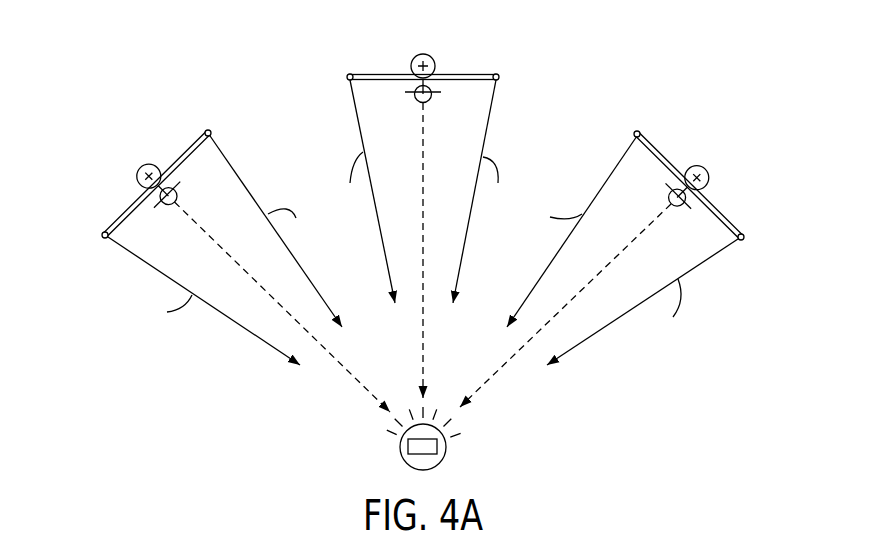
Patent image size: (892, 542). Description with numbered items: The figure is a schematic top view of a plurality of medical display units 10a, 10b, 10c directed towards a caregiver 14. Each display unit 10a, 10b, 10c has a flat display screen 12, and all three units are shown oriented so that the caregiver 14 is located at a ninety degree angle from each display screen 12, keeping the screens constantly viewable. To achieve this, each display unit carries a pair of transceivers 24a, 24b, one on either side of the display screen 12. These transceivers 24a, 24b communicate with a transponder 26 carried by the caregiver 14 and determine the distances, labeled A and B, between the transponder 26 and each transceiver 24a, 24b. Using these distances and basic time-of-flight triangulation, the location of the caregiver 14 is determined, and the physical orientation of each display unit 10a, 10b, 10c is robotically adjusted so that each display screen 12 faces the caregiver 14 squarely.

The medical display unit 10a is at (96, 150).
The medical display unit 10b is at (470, 42).
The medical display unit 10c is at (737, 152).
The display screen 12 is at (190, 160).
The caregiver 14 is at (440, 462).
The transceiver 24a is at (102, 235).
The transceiver 24b is at (208, 130).
The transponder 26 is at (412, 450).